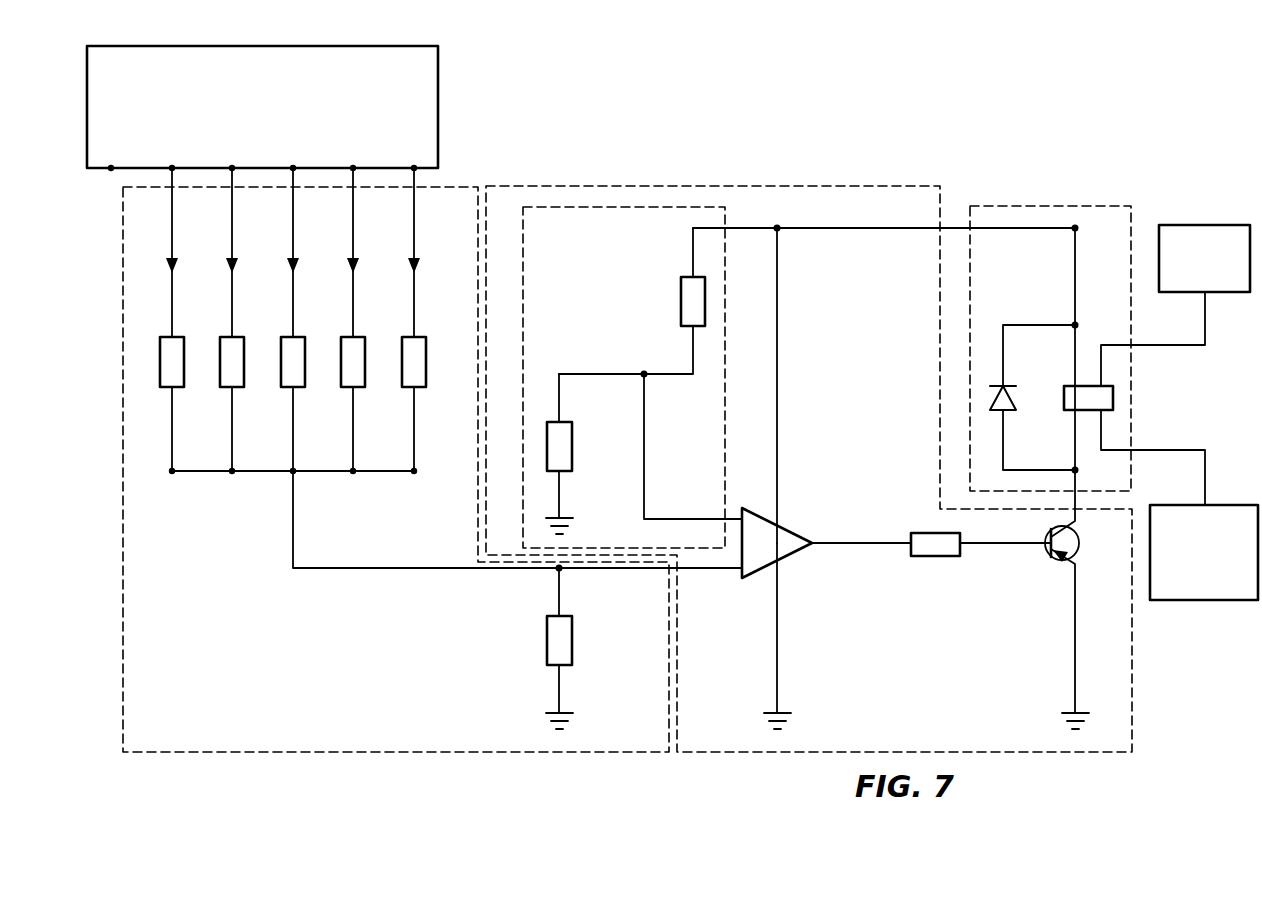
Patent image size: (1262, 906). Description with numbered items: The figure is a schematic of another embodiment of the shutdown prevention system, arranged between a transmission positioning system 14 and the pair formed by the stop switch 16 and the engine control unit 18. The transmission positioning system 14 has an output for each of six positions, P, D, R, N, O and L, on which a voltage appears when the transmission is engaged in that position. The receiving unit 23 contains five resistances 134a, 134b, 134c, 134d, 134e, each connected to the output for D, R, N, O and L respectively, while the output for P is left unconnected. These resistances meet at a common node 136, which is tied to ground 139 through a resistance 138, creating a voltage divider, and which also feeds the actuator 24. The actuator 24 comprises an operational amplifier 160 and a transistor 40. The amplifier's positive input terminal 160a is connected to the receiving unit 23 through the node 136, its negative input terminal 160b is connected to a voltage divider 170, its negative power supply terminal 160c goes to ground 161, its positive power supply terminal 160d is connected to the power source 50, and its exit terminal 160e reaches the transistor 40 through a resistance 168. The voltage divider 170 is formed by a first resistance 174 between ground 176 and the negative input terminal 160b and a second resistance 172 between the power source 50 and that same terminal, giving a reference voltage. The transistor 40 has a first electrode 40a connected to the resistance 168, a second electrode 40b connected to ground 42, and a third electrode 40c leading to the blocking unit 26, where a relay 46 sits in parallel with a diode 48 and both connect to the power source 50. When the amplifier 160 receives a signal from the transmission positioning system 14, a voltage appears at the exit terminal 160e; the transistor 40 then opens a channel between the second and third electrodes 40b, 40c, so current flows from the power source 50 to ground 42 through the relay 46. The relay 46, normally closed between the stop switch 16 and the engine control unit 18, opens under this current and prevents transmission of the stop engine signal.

The transmission positioning system 14 is at (438, 70).
The stop switch 16 is at (1212, 225).
The engine control unit 18 is at (1215, 602).
The receiving unit 23 is at (236, 752).
The actuator 24 is at (883, 186).
The blocking unit 26 is at (1023, 206).
The transistor 40 is at (1080, 550).
The first electrode 40a is at (1022, 544).
The second electrode 40b is at (1074, 614).
The third electrode 40c is at (1074, 514).
The ground 42 is at (1080, 720).
The relay 46 is at (1097, 398).
The diode 48 is at (1010, 405).
The power source 50 is at (1077, 232).
The resistance 134a is at (178, 364).
The resistance 134b is at (238, 364).
The resistance 134c is at (299, 364).
The resistance 134d is at (359, 364).
The resistance 134e is at (420, 364).
The node 136 is at (559, 570).
The resistance 138 is at (556, 640).
The ground 139 is at (566, 723).
The operational amplifier 160 is at (790, 562).
The positive input terminal 160a is at (738, 572).
The negative input terminal 160b is at (740, 518).
The negative power supply terminal 160c is at (778, 570).
The positive power supply terminal 160d is at (785, 530).
The exit terminal 160e is at (814, 548).
The ground 161 is at (770, 721).
The resistance 168 is at (933, 545).
The voltage divider 170 is at (609, 207).
The second resistance 172 is at (684, 304).
The first resistance 174 is at (564, 441).
The ground 176 is at (568, 530).